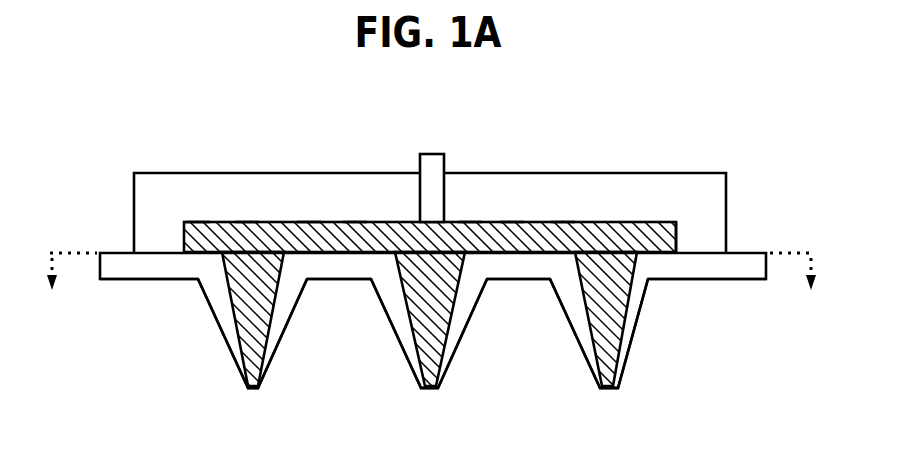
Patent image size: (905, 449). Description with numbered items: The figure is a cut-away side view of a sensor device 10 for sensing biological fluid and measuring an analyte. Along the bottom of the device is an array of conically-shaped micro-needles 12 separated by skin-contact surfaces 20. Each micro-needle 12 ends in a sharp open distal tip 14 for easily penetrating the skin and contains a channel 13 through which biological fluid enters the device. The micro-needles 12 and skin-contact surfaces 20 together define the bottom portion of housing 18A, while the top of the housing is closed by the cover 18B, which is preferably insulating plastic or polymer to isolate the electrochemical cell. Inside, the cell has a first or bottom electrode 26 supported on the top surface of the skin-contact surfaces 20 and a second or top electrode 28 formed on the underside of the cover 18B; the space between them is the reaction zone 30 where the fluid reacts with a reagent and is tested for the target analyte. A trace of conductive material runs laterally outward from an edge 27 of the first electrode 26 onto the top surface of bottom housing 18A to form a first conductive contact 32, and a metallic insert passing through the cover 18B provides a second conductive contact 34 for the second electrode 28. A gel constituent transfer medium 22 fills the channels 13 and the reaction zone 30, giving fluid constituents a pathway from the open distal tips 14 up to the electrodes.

The sensor device 10 is at (437, 253).
The micro-needle 12 is at (203, 303).
The channel 13 is at (240, 340).
The open distal tip 14 is at (235, 387).
The bottom portion of housing 18A is at (122, 273).
The cover 18B is at (145, 205).
The skin-contact surface 20 is at (340, 280).
The constituent transfer medium 22 is at (409, 263).
The first electrode 26 is at (197, 222).
The edge 27 is at (678, 250).
The second electrode 28 is at (247, 222).
The reaction zone 30 is at (355, 222).
The first conductive contact 32 is at (742, 250).
The second conductive contact 34 is at (442, 154).